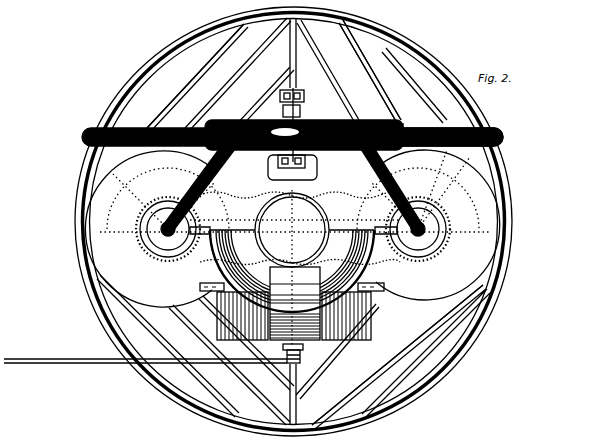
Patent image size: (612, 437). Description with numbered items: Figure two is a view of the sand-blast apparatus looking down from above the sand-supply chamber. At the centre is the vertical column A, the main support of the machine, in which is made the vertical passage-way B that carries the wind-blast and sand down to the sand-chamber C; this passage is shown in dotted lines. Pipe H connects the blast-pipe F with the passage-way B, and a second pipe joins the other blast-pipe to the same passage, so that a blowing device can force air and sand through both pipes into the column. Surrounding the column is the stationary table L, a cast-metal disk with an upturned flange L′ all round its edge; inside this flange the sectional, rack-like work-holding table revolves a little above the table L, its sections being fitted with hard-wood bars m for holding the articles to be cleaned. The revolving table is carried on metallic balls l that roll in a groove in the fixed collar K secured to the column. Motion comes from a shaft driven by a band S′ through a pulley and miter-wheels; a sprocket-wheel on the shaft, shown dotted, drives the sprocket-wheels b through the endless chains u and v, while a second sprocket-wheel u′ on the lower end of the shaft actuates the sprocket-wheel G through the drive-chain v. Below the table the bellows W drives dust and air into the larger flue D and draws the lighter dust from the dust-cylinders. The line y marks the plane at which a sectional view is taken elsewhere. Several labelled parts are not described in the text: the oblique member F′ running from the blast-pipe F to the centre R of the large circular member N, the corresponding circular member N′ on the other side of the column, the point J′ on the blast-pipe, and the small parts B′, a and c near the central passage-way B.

The blast-pipe F is at (90, 130).
The left arm F′ is at (192, 158).
The shaft joint J′ is at (393, 123).
The fixed collar K is at (147, 246).
The stationary table L is at (293, 223).
The upturned flange L′ is at (88, 208).
The sprocket-wheel G is at (138, 235).
The sprocket-wheels b is at (137, 230).
The hub R is at (293, 230).
The left disk / bearing N is at (335, 101).
The right disk N′ is at (428, 225).
The pipe H is at (229, 214).
The vertical column A is at (292, 230).
The passage-way B is at (300, 226).
The cylinder part B′ is at (341, 211).
The endless sprocket-wheel chain u is at (293, 285).
The second sprocket-wheel u′ is at (305, 294).
The drive-chain v is at (322, 228).
The metallic balls l is at (389, 216).
The axis a is at (292, 244).
The larger flue D is at (253, 238).
The sand-chamber C is at (292, 271).
The housing edge c is at (292, 250).
The bellows W is at (294, 316).
The band S′ is at (283, 346).
The section line y is at (300, 223).
The bars m is at (371, 54).